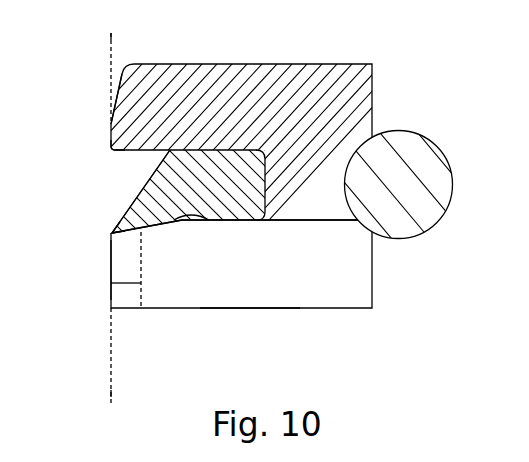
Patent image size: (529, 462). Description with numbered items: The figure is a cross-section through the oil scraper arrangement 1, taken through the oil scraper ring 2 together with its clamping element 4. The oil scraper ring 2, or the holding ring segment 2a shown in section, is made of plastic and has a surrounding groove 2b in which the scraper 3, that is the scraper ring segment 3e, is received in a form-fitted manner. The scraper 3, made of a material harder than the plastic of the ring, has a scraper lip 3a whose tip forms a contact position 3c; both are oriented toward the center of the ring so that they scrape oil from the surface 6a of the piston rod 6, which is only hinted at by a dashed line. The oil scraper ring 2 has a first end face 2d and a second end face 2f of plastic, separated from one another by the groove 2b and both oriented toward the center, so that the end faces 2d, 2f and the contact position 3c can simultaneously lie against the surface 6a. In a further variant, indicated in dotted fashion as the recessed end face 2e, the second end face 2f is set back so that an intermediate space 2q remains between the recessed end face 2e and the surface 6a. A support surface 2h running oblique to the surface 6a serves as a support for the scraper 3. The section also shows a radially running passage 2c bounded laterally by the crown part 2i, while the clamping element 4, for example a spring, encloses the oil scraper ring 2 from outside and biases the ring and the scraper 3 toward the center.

The oil scraper arrangement 1 is at (399, 63).
The oil scraper ring 2 is at (256, 88).
The holding ring segment 2a is at (241, 142).
The surrounding groove 2b is at (110, 151).
The passage 2c is at (340, 300).
The first end face 2d is at (111, 127).
The recessed end face 2e is at (141, 283).
The second end face 2f is at (111, 257).
The support surface 2h is at (133, 226).
The crown part 2i is at (248, 309).
The intermediate space 2q is at (128, 296).
The scraper 3 is at (160, 197).
The scraper ring segment 3e is at (141, 191).
The scraper lip 3a is at (111, 231).
The contact position 3c is at (111, 232).
The clamping element 4 is at (424, 157).
The piston rod 6 is at (108, 402).
The surface of piston rod 6a is at (111, 38).